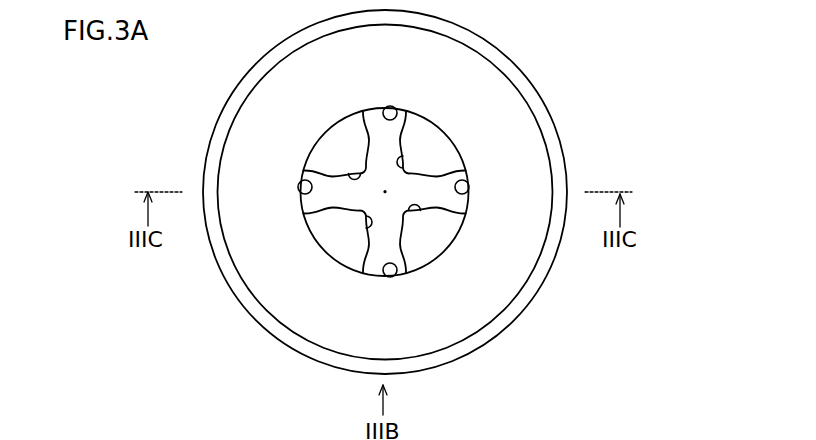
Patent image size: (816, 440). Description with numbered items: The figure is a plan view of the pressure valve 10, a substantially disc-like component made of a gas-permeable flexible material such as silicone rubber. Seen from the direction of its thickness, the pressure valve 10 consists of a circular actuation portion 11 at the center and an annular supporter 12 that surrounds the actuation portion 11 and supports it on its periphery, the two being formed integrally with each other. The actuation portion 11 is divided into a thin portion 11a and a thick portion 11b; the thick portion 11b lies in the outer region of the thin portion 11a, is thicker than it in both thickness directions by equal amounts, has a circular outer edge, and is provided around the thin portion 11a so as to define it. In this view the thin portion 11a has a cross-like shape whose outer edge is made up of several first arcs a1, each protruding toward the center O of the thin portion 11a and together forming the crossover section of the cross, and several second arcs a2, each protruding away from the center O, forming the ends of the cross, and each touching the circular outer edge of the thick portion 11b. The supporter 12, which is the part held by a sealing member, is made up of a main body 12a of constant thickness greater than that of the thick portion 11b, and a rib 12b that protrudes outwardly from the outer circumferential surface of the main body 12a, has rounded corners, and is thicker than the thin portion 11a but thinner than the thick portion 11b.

The pressure valve 10 is at (596, 57).
The actuation portion 11 is at (140, 278).
The thin portion 11a is at (368, 202).
The thick portion 11b is at (339, 237).
The supporter 12 is at (625, 277).
The main body 12a is at (510, 265).
The rib 12b is at (507, 313).
The first arcs a1 is at (400, 165).
The second arcs a2 is at (390, 107).